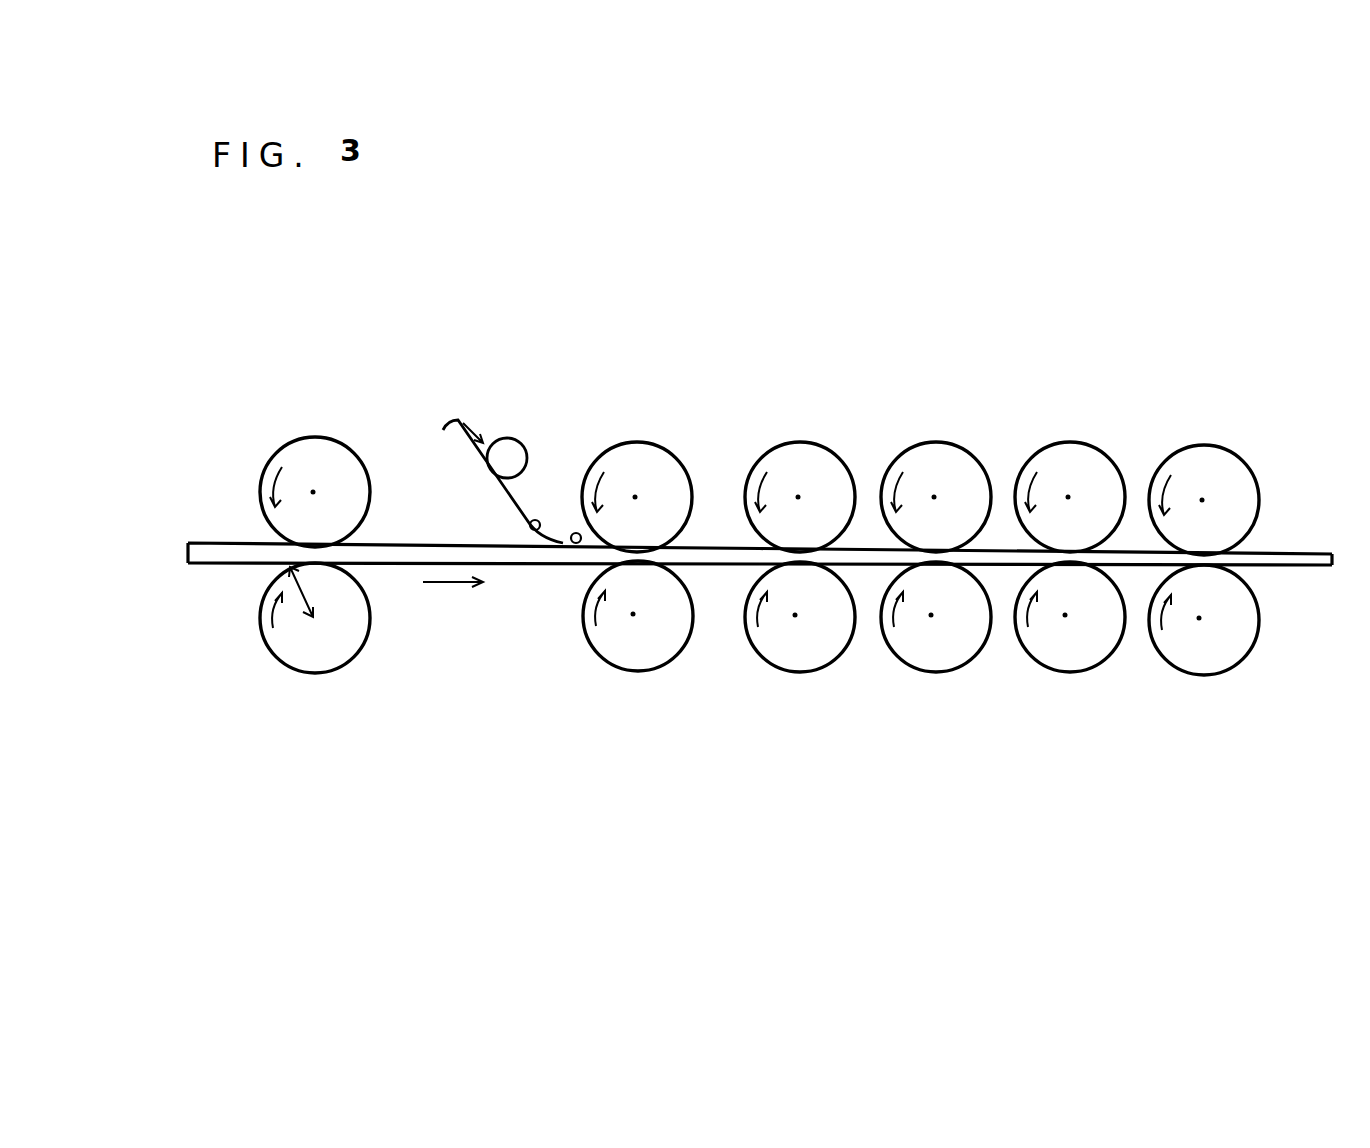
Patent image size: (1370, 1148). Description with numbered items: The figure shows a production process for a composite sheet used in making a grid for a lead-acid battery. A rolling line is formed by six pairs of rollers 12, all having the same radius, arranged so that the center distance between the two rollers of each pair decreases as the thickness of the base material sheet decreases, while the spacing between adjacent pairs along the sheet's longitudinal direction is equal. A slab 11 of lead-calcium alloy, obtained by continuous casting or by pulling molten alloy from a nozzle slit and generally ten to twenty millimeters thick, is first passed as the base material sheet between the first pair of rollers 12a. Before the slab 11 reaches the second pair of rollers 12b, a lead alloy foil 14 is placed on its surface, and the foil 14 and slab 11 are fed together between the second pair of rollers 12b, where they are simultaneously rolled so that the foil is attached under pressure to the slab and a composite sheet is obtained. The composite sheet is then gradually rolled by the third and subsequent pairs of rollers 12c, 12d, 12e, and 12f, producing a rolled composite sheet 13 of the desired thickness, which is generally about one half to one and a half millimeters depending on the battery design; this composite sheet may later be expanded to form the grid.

The slab 11 is at (220, 565).
The pairs of rollers 12 is at (1277, 340).
The first pair of rollers 12a is at (350, 443).
The second pair of rollers 12b is at (660, 442).
The third pair of rollers 12c is at (823, 442).
The fourth pair of rollers 12d is at (953, 445).
The fifth pair of rollers 12e is at (1097, 445).
The sixth pair of rollers 12f is at (1213, 448).
The composite sheet 13 is at (1297, 567).
The lead alloy foil 14 is at (517, 505).